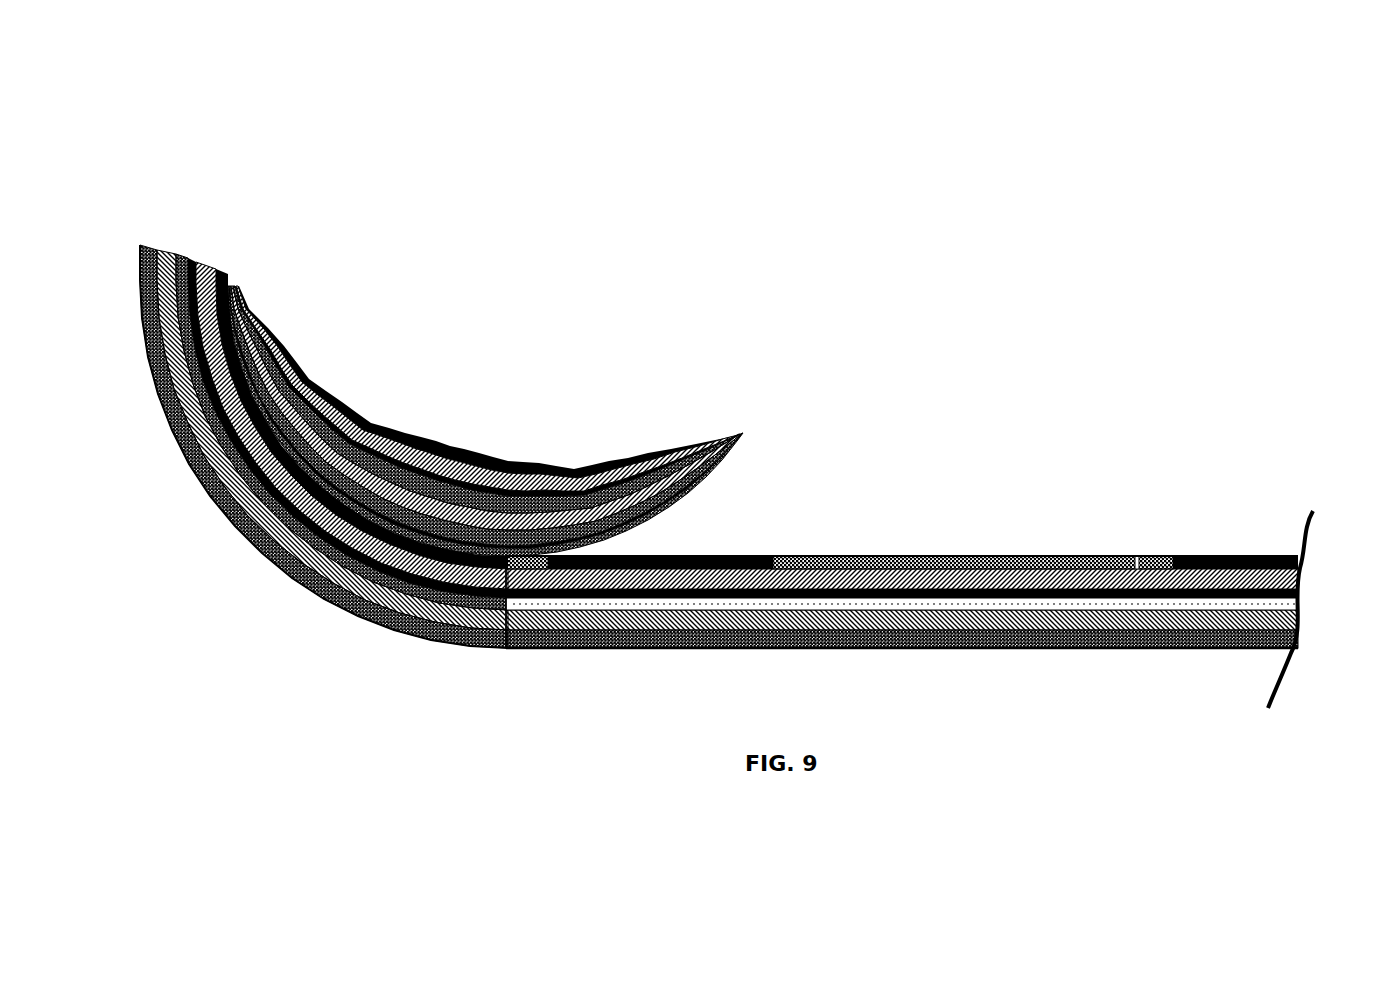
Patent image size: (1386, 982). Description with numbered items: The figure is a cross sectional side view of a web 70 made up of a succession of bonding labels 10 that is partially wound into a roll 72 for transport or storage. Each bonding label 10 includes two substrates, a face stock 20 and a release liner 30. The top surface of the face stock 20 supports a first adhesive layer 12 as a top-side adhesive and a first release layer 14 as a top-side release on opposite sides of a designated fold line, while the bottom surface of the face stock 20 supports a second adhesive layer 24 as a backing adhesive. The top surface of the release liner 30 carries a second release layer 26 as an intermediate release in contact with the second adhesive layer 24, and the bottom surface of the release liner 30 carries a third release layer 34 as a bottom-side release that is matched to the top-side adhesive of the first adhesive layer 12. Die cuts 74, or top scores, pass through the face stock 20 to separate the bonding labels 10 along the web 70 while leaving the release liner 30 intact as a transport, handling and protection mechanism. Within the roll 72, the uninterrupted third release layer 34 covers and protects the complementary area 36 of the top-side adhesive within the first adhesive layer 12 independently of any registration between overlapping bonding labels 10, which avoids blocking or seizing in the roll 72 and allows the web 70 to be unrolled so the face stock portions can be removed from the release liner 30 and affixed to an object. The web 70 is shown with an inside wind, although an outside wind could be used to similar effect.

The bonding label 10 is at (873, 545).
The first adhesive layer 12 is at (218, 272).
The first release layer 14 is at (1012, 548).
The face stock 20 is at (203, 257).
The second adhesive layer 24 is at (192, 255).
The second release layer 26 is at (175, 262).
The release liner 30 is at (152, 243).
The third release layer 34 is at (138, 263).
The complementary area 36 is at (702, 545).
The web 70 is at (858, 644).
The roll 72 is at (222, 520).
The die cuts 74 is at (1145, 548).